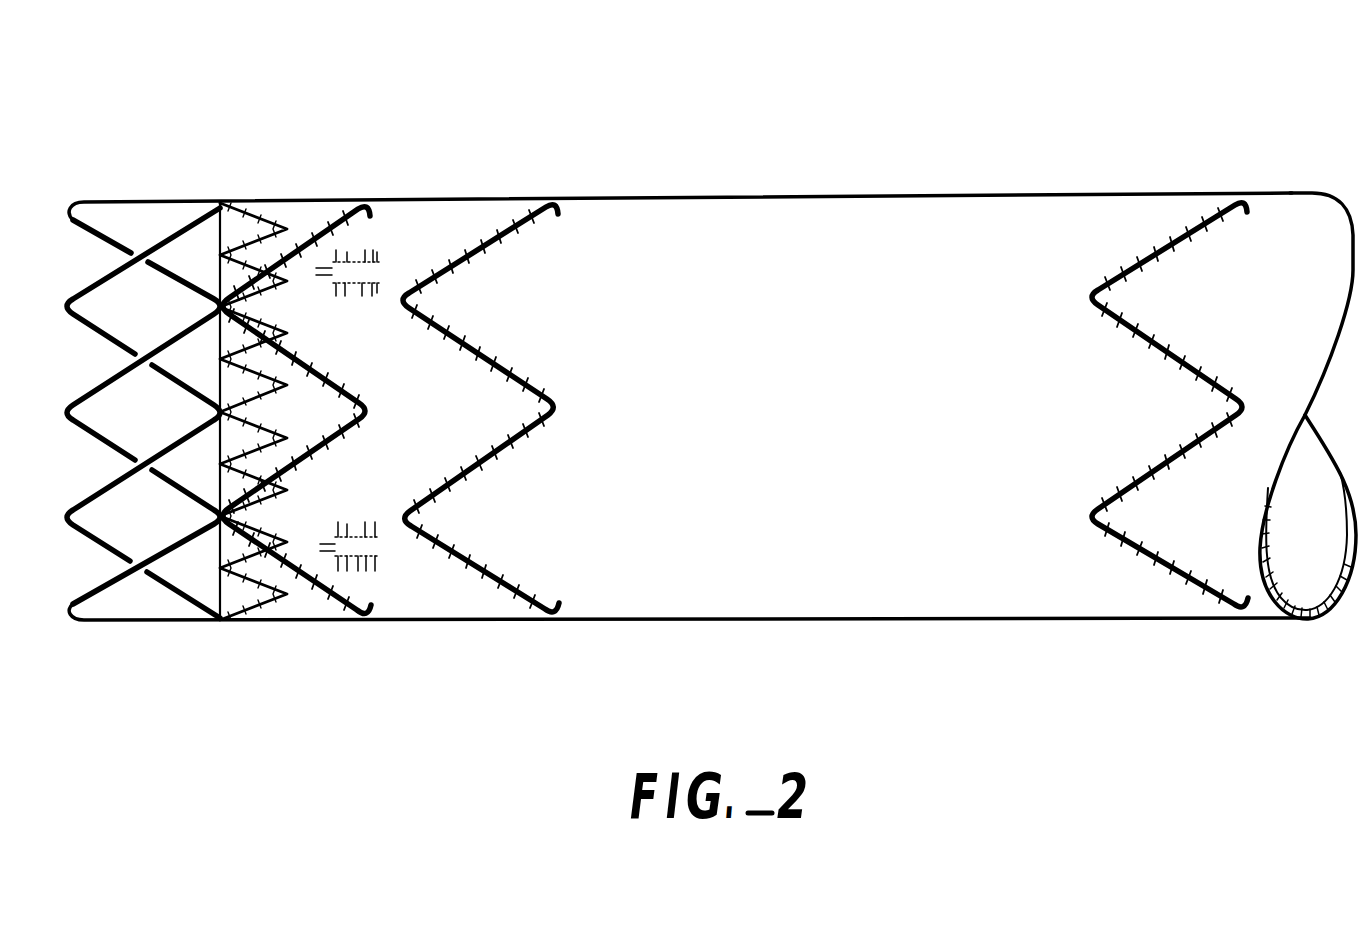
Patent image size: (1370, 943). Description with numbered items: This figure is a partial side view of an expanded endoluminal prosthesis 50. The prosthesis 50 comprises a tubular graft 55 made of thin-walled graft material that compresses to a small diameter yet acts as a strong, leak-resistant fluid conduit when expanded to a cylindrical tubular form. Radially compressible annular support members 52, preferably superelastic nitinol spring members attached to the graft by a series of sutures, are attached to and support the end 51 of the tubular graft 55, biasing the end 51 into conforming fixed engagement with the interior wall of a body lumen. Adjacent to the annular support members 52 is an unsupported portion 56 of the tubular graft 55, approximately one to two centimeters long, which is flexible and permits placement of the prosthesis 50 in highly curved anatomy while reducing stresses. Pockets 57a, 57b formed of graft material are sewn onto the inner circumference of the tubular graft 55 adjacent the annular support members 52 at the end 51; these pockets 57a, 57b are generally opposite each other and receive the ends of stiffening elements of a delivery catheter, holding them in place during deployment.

The prosthesis 50 is at (869, 100).
The end of tubular graft 51 is at (258, 622).
The annular support members 52 is at (293, 253).
The tubular graft 55 is at (618, 622).
The unsupported portion 56 is at (713, 197).
The pocket 57a is at (372, 245).
The pocket 57b is at (352, 625).